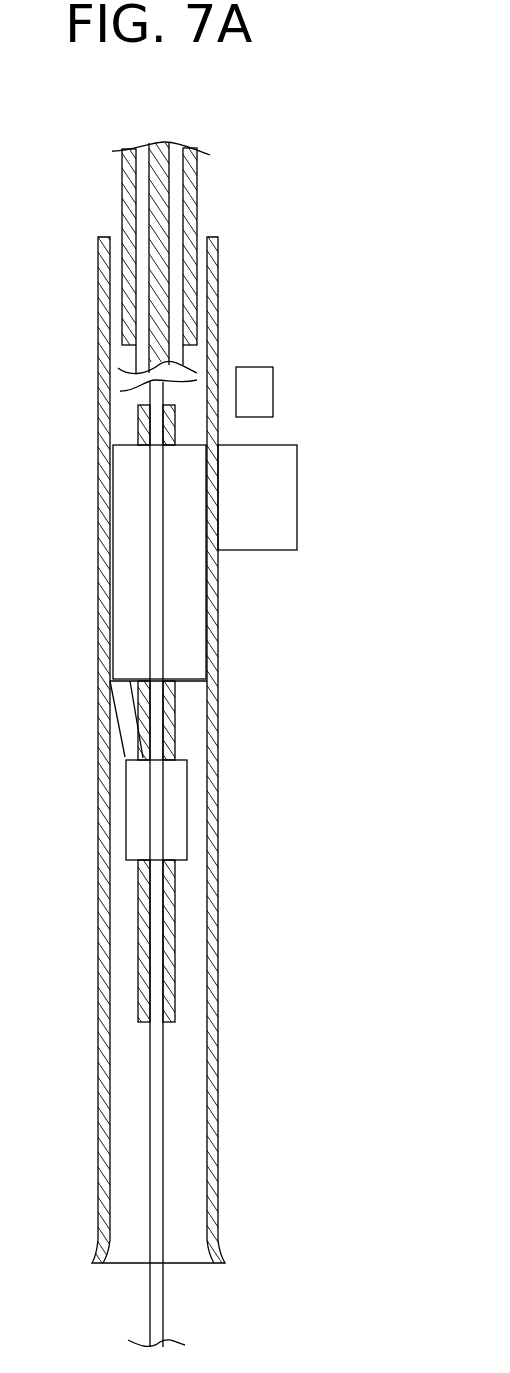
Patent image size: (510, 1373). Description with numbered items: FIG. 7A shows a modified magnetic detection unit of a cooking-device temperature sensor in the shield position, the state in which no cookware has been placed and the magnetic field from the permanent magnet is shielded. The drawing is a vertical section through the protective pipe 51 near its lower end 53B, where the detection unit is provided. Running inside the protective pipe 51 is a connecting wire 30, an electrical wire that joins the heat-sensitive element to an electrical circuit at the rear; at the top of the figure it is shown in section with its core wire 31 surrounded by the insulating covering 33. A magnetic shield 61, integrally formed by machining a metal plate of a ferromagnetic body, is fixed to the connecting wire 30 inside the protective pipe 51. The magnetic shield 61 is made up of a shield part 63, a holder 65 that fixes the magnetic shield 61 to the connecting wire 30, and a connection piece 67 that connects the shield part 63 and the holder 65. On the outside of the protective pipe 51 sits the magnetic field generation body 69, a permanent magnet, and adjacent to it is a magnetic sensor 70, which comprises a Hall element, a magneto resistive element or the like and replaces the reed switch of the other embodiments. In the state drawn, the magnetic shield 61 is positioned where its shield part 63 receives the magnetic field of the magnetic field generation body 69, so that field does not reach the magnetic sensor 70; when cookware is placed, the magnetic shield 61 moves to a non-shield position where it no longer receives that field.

The connecting wire 30 is at (203, 165).
The core wire 31 is at (168, 192).
The insulating covering 33 is at (197, 196).
The protective pipe 51 is at (218, 325).
The lower end 53B is at (213, 1265).
The magnetic shield 61 is at (192, 728).
The shield part 63 is at (207, 595).
The holder 65 is at (188, 798).
The connection piece 67 is at (122, 703).
The magnetic field generation body 69 is at (297, 500).
The magnetic sensor 70 is at (273, 383).